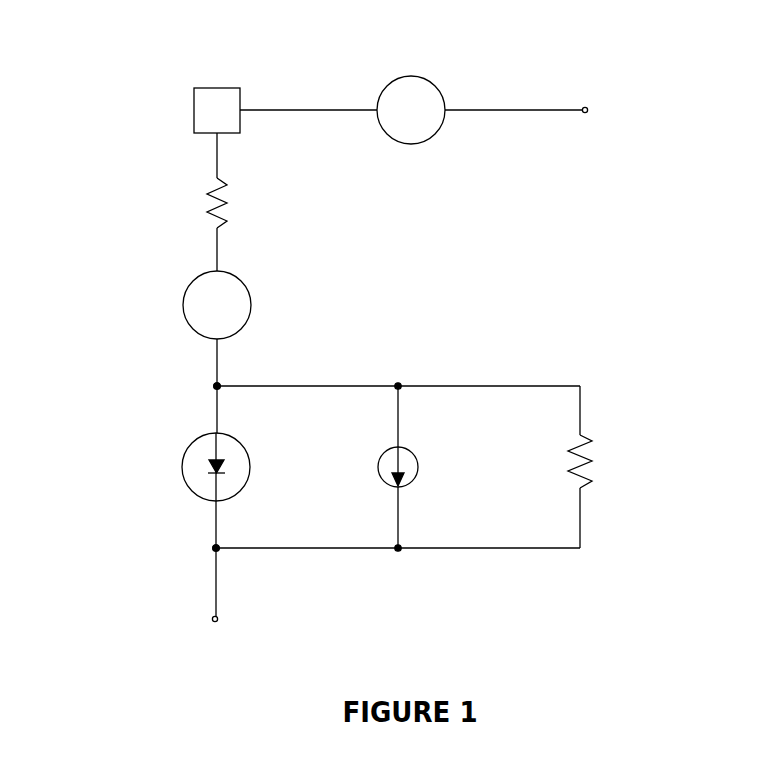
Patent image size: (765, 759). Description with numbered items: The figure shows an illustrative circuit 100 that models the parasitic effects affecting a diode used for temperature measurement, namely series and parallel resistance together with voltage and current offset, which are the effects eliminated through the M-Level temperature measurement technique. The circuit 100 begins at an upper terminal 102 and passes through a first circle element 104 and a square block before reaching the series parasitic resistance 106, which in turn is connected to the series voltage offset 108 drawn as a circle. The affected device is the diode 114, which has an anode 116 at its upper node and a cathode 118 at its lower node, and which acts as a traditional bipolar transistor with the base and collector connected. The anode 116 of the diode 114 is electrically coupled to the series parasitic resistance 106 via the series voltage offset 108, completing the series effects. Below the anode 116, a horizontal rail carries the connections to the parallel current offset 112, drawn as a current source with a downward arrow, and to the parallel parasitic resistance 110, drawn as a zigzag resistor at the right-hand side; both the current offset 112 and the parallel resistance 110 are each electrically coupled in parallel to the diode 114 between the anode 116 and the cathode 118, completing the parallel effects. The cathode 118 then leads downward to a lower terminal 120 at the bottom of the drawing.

The illustrative circuit 100 is at (191, 43).
The input terminal 102 is at (586, 114).
The first current source / meter 104 is at (411, 146).
The series parasitic resistance 106 is at (197, 203).
The series voltage offset 108 is at (173, 306).
The parallel parasitic resistance 110 is at (598, 464).
The parallel current offset 112 is at (438, 468).
The diode 114 is at (256, 467).
The anode 116 is at (210, 428).
The cathode 118 is at (208, 505).
The output terminal 120 is at (221, 618).